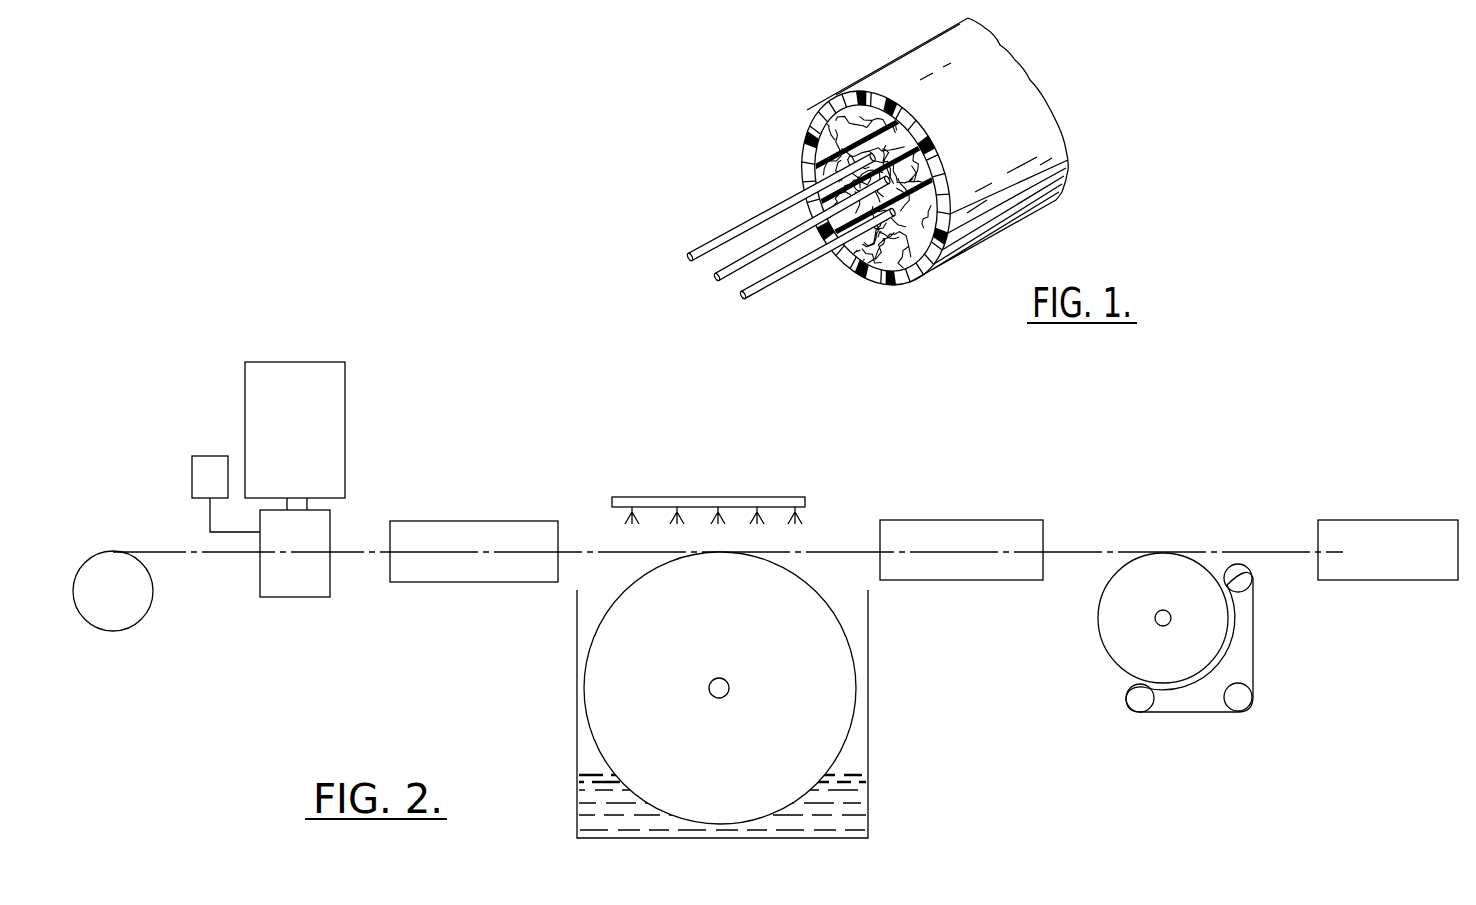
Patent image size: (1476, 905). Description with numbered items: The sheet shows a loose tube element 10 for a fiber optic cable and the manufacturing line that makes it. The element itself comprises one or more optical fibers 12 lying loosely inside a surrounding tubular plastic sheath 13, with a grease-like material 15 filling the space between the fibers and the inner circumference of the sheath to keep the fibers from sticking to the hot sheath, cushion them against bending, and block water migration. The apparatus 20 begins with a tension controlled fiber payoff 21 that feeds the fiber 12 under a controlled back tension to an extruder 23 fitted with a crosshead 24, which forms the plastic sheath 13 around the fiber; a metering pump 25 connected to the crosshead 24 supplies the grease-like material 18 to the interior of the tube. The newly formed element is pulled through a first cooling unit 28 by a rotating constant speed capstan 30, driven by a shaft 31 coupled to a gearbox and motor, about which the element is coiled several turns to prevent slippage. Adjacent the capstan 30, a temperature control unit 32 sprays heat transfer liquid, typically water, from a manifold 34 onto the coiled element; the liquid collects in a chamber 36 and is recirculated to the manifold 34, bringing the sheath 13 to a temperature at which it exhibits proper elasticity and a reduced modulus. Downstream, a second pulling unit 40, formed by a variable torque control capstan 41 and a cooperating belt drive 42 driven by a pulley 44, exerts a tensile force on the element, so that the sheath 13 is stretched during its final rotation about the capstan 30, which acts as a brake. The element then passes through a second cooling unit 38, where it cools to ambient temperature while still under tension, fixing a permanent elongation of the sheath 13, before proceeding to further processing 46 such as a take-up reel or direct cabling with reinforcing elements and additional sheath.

In FIG. 1, the loose tube element 10 is at (888, 56).
In FIG. 2, the loose tube element 10 is at (358, 562).
In FIG. 1, the optical fibers 12 is at (732, 230).
In FIG. 2, the optical fibers 12 is at (160, 551).
In FIG. 1, the tubular plastic sheath 13 is at (923, 262).
In FIG. 1, the grease-like material 15 is at (900, 247).
In FIG. 2, the grease-like material 18 is at (221, 533).
In FIG. 2, the apparatus 20 is at (580, 390).
In FIG. 2, the fiber payoff 21 is at (108, 557).
In FIG. 2, the extruder 23 is at (345, 412).
In FIG. 2, the crosshead 24 is at (331, 537).
In FIG. 2, the metering pump 25 is at (213, 456).
In FIG. 2, the first cooling unit 28 is at (527, 521).
In FIG. 2, the capstan 30 is at (812, 578).
In FIG. 2, the shaft 31 is at (730, 684).
In FIG. 2, the temperature control unit 32 is at (695, 490).
In FIG. 2, the manifold 34 is at (628, 500).
In FIG. 2, the chamber 36 is at (868, 728).
In FIG. 2, the second cooling unit 38 is at (997, 520).
In FIG. 2, the second pulling unit 40 is at (1163, 554).
In FIG. 2, the variable torque control capstan 41 is at (1100, 628).
In FIG. 2, the belt drive 42 is at (1175, 713).
In FIG. 2, the pulley 44 is at (1238, 703).
In FIG. 2, the further processing 46 is at (1382, 525).